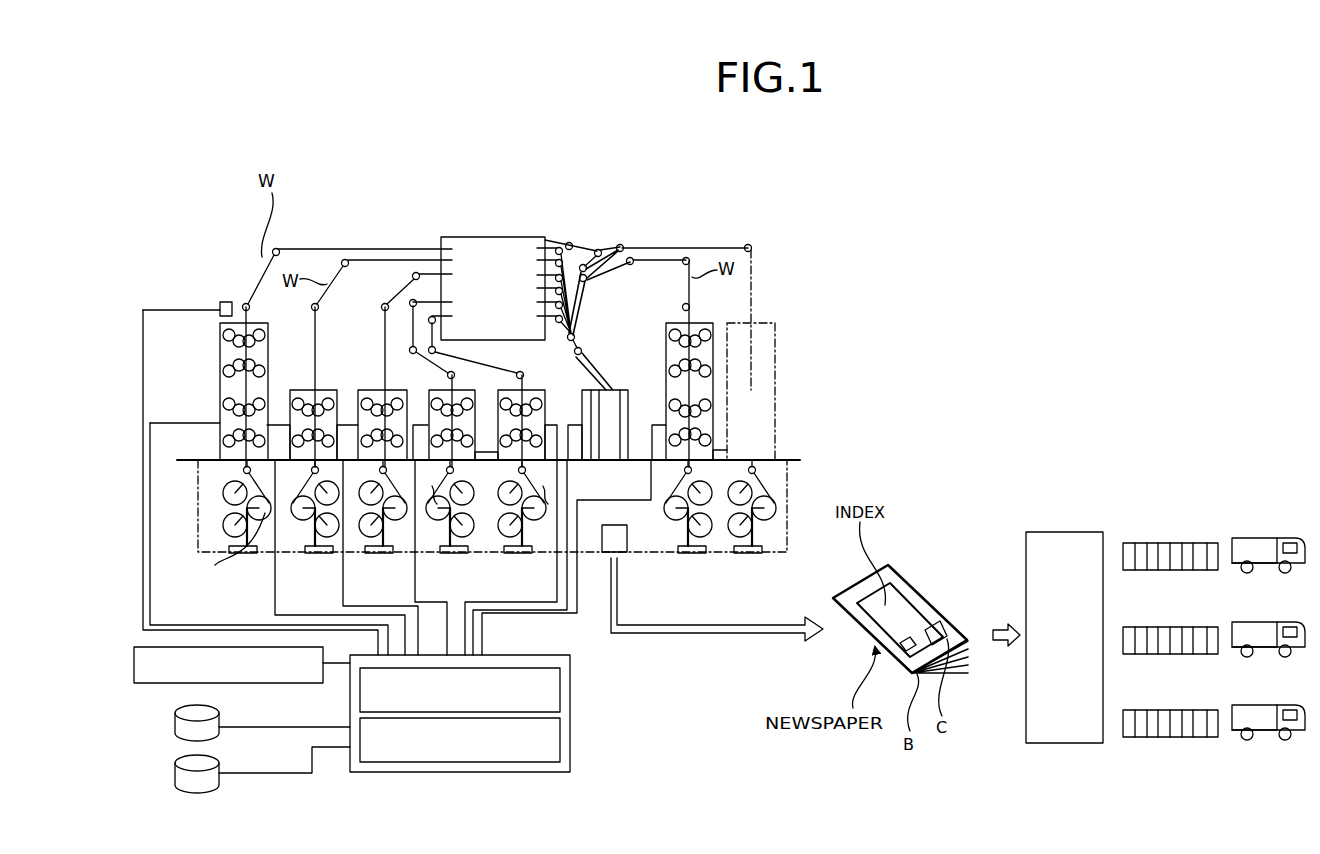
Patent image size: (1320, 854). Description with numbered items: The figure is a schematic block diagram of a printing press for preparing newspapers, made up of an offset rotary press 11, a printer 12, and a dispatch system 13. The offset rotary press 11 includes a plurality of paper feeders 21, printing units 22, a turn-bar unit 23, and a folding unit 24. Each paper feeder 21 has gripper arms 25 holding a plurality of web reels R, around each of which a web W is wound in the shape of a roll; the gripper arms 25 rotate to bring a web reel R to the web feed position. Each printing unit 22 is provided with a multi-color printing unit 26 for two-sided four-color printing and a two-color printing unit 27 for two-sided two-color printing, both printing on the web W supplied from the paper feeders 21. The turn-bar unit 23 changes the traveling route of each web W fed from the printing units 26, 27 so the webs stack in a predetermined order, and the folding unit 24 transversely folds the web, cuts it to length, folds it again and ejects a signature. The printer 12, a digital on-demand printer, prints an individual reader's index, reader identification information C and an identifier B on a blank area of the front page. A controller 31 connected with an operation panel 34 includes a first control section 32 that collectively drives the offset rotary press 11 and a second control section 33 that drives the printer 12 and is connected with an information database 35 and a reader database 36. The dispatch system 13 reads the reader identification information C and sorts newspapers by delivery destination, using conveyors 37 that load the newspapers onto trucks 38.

The offset rotary press 11 is at (338, 208).
The printer 12 is at (226, 301).
The dispatch system 13 is at (1063, 528).
The paper feeder 21 is at (283, 538).
The printing unit 22 is at (205, 353).
The turn-bar unit 23 is at (485, 245).
The folding unit 24 is at (615, 370).
The gripper arm 25 is at (233, 495).
The multi-color printing unit 26 is at (228, 390).
The 2-color printing unit 27 is at (305, 388).
The controller 31 is at (500, 718).
The first control section 32 is at (560, 690).
The second control section 33 is at (560, 738).
The operation panel 34 is at (325, 653).
The information database 35 is at (233, 702).
The reader database 36 is at (233, 751).
The conveyor 37 is at (1170, 542).
The truck 38 is at (1255, 538).